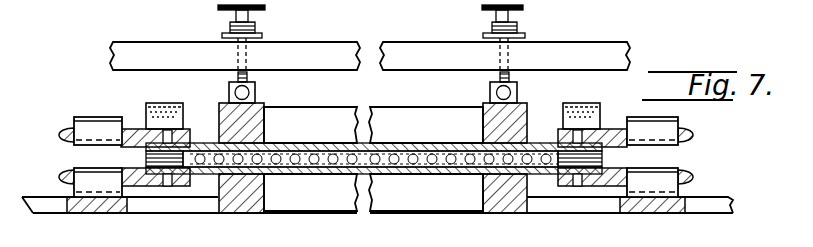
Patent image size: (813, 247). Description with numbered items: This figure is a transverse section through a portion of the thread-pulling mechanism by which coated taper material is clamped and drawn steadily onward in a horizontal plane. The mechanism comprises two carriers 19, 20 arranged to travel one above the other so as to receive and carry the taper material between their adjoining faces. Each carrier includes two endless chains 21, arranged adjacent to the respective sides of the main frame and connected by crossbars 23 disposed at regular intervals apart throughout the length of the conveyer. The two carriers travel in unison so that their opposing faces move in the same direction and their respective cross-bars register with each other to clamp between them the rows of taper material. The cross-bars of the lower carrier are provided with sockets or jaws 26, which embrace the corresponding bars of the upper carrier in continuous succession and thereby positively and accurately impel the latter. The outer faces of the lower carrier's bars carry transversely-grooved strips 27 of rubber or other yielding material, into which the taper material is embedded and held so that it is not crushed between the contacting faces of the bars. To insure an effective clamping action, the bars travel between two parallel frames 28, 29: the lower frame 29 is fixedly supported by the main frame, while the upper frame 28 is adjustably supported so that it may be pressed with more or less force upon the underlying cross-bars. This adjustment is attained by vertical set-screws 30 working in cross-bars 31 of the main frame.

The carrier 19 is at (305, 142).
The carrier 20 is at (322, 173).
The endless chains 21 is at (75, 165).
The crossbars 23 is at (421, 142).
The sockets or jaws 26 is at (169, 108).
The transversely-grooved strips 27 is at (407, 167).
The upper frame 28 is at (268, 110).
The lower frame 29 is at (455, 199).
The vertical set-screws 30 is at (263, 8).
The cross-bars of the main frame 31 is at (331, 46).